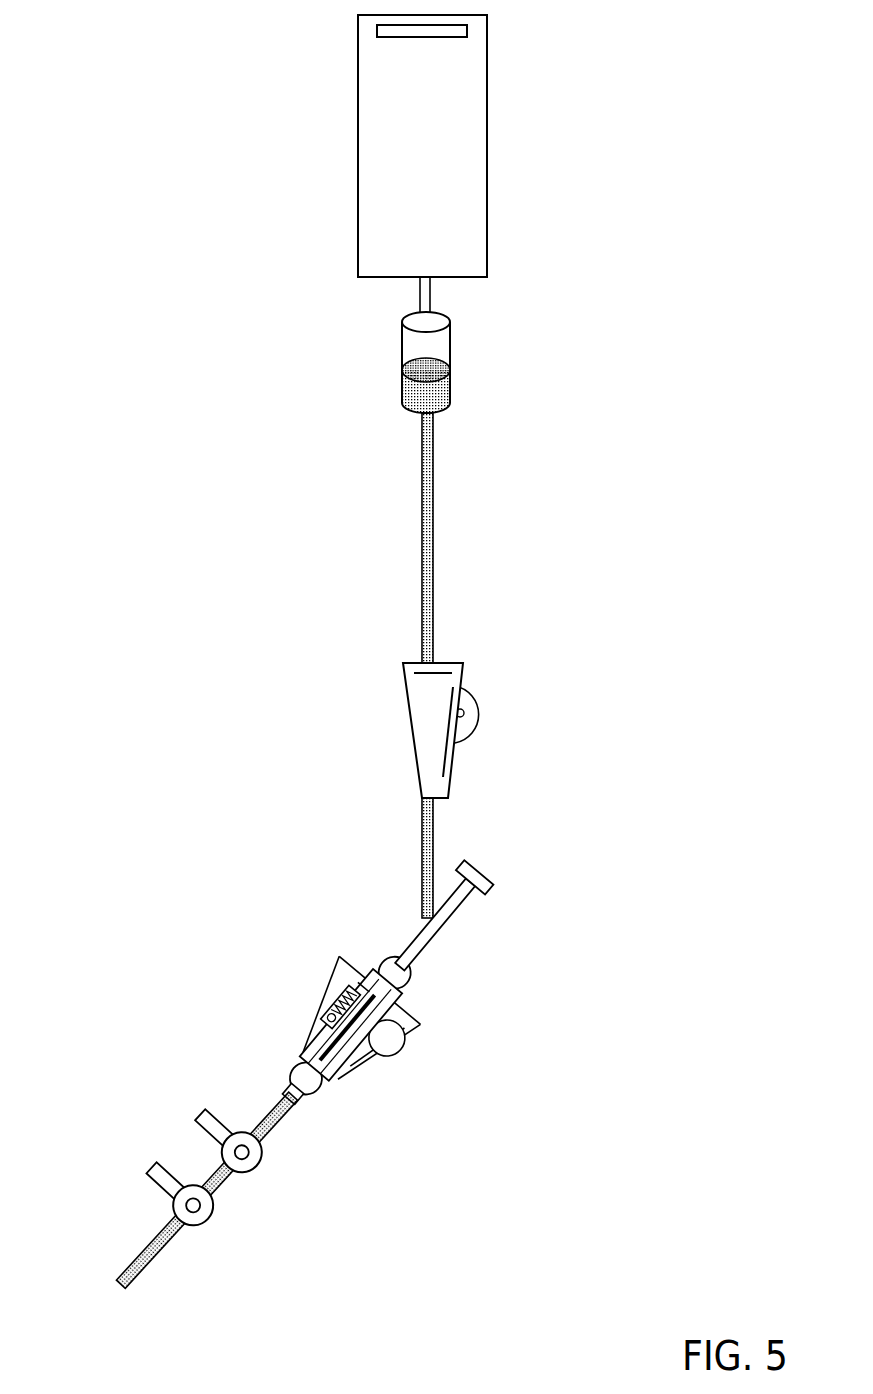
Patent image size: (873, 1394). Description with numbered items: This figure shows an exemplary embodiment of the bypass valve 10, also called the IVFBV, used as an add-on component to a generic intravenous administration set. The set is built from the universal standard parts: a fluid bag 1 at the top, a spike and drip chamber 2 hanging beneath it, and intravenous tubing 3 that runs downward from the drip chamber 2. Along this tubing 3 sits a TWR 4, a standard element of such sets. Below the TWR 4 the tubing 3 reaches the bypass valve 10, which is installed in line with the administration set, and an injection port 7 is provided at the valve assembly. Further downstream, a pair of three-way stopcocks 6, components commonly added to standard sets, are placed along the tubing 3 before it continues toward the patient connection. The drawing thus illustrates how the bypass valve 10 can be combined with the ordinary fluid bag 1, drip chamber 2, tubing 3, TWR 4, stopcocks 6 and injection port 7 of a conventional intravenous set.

The fluid bag 1 is at (515, 137).
The drip chamber 2 is at (515, 357).
The intravenous tubing 3 is at (450, 524).
The TWR 4 is at (504, 756).
The three-way stopcock 6 is at (170, 1111).
The injection port 7 is at (515, 884).
The bypass valve 10 is at (455, 993).